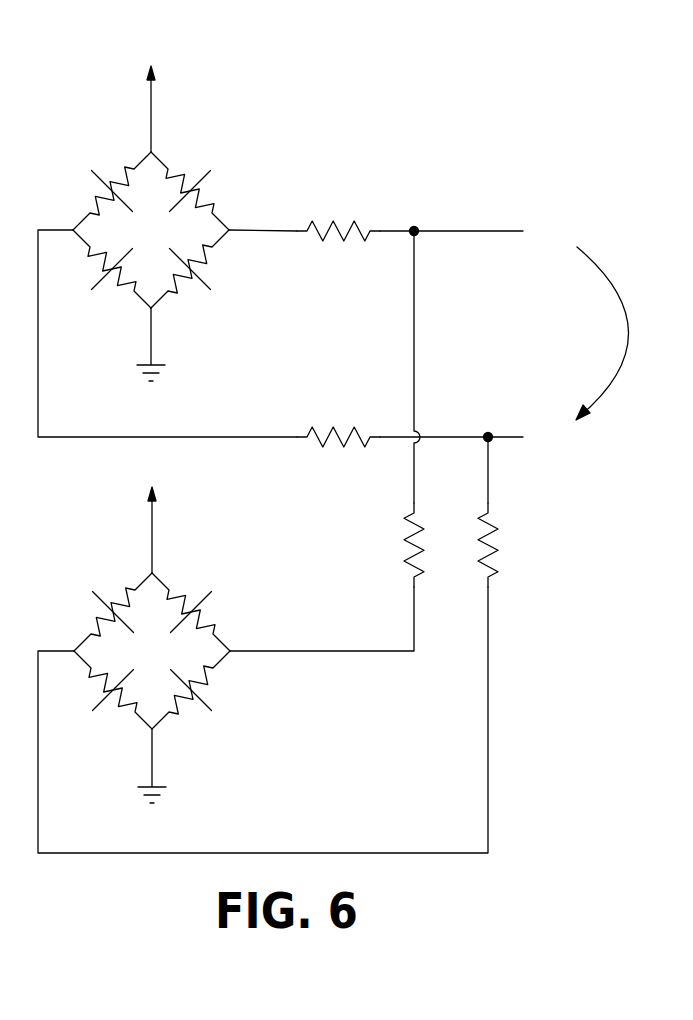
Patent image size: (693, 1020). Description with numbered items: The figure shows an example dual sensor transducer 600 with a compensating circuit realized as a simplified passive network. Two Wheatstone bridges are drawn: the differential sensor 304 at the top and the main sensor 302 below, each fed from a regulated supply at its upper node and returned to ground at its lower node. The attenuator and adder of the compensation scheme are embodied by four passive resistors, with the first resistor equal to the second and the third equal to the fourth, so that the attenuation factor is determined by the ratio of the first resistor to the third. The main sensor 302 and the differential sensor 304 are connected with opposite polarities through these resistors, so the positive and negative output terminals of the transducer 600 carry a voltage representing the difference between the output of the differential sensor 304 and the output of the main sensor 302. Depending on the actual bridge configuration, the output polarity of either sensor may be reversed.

The dual sensor transducer 600 is at (277, 121).
The differential sensor 304 is at (172, 239).
The main sensor 302 is at (173, 660).